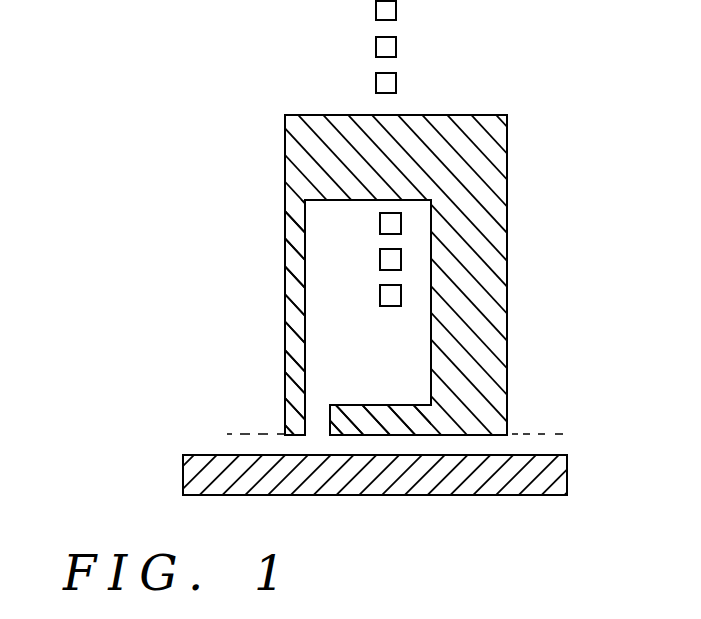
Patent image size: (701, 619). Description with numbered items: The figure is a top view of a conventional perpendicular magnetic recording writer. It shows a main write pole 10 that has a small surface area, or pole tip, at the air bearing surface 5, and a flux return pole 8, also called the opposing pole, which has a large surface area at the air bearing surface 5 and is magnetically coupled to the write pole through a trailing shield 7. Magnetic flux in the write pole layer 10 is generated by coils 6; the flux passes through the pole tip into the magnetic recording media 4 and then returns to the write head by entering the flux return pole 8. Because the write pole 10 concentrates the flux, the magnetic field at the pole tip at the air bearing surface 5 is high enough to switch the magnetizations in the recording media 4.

The magnetic recording media 4 is at (197, 473).
The air bearing surface 5 is at (400, 434).
The coils 6 is at (388, 10).
The trailing shield 7 is at (495, 255).
The flux return pole 8 is at (392, 421).
The main write pole 10 is at (292, 395).